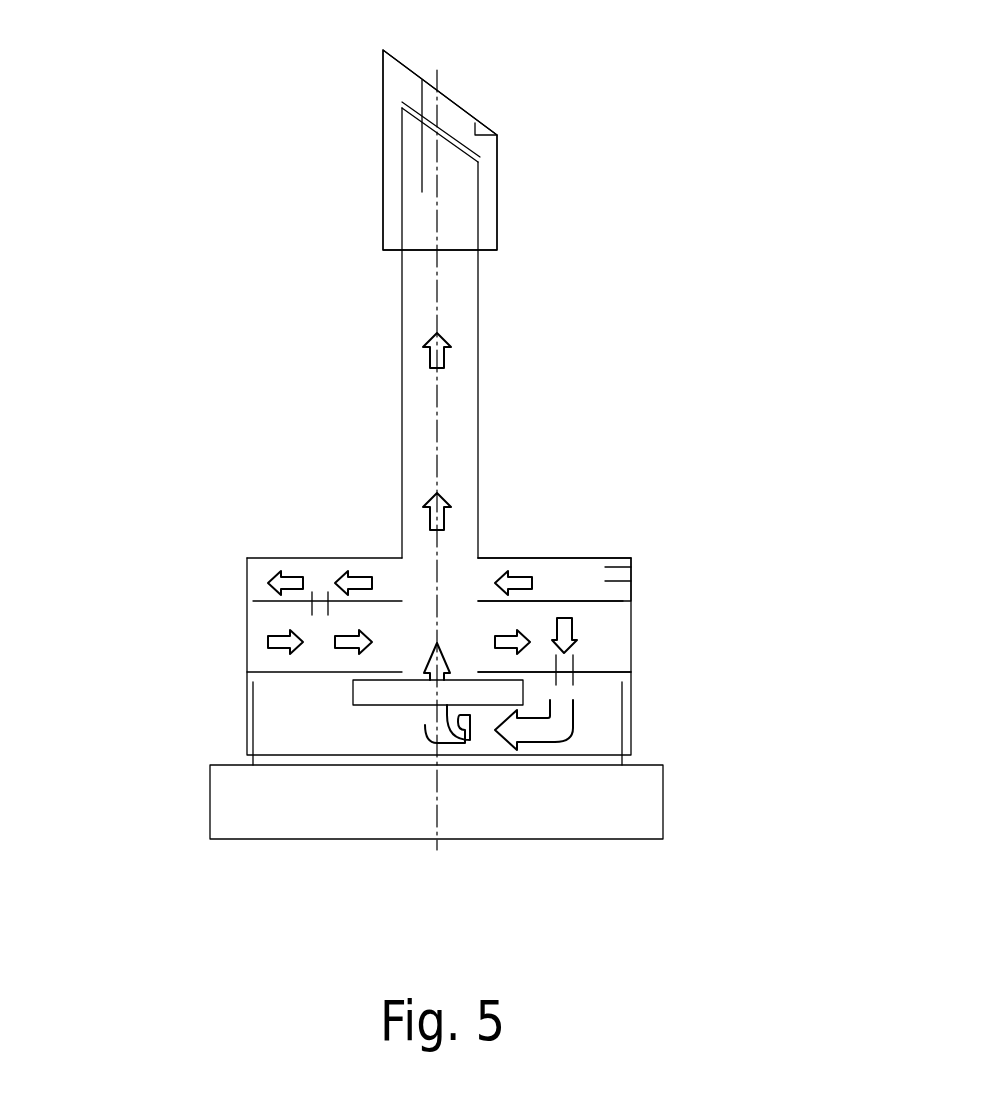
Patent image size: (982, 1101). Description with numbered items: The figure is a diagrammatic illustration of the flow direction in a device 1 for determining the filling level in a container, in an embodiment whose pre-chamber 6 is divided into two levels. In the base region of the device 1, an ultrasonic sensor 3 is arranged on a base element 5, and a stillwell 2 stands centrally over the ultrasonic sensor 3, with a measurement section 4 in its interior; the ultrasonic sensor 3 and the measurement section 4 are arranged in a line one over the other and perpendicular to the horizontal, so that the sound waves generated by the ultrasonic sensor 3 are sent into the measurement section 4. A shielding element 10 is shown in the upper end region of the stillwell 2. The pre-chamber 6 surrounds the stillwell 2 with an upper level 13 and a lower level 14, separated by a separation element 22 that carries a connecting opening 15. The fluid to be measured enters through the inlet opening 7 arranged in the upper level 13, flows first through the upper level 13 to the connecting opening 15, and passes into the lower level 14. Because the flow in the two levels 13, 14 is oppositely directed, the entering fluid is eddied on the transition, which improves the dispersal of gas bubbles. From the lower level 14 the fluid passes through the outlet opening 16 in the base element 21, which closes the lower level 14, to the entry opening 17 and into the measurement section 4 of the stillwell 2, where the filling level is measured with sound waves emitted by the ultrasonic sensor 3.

The device 1 is at (318, 380).
The stillwell 2 is at (402, 312).
The ultrasonic sensor 3 is at (353, 687).
The measurement section 4 is at (455, 303).
The base element 5 is at (210, 805).
The pre-chamber 6 is at (232, 585).
The inlet opening 7 is at (632, 572).
The shielding element 10 is at (383, 97).
The upper level 13 is at (577, 572).
The lower level 14 is at (592, 628).
The connecting opening 15 is at (318, 607).
The outlet opening 16 is at (567, 677).
The entry opening 17 is at (458, 668).
The base element 21 is at (631, 667).
The separation element 22 is at (550, 601).